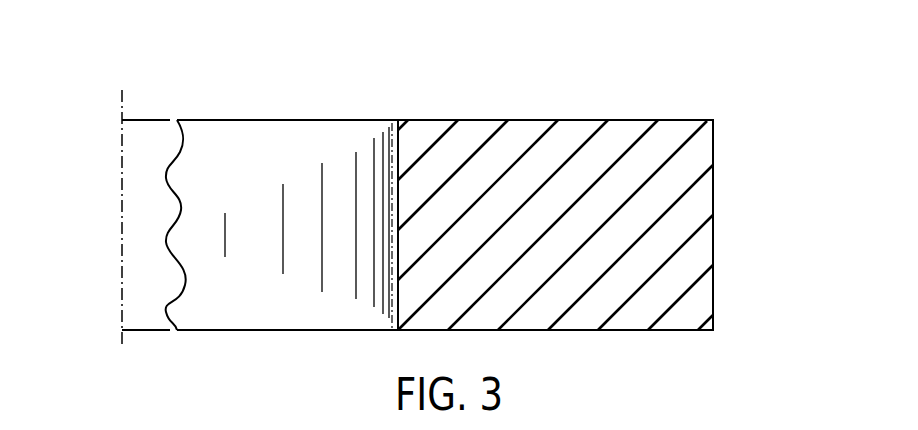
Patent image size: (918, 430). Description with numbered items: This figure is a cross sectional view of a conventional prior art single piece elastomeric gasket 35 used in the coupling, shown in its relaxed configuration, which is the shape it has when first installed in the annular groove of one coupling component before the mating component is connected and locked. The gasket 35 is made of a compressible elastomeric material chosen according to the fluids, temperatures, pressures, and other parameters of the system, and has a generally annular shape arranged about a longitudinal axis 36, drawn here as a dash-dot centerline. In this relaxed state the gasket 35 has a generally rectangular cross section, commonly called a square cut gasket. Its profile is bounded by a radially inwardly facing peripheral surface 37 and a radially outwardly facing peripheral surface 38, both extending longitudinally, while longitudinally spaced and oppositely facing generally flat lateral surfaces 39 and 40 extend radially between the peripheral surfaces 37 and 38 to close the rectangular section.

The gasket 35 is at (267, 99).
The longitudinal axis 36 is at (122, 101).
The radially inwardly facing peripheral surface 37 is at (398, 252).
The radially outwardly facing peripheral surface 38 is at (713, 233).
The lateral surface 39 is at (555, 120).
The lateral surface 40 is at (613, 331).